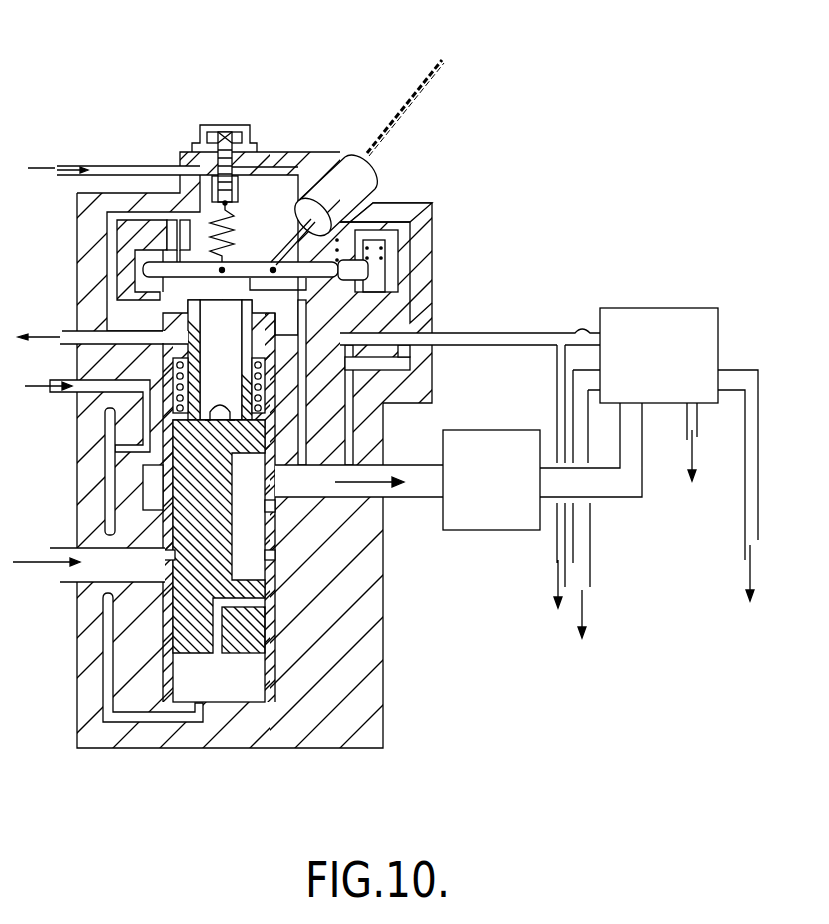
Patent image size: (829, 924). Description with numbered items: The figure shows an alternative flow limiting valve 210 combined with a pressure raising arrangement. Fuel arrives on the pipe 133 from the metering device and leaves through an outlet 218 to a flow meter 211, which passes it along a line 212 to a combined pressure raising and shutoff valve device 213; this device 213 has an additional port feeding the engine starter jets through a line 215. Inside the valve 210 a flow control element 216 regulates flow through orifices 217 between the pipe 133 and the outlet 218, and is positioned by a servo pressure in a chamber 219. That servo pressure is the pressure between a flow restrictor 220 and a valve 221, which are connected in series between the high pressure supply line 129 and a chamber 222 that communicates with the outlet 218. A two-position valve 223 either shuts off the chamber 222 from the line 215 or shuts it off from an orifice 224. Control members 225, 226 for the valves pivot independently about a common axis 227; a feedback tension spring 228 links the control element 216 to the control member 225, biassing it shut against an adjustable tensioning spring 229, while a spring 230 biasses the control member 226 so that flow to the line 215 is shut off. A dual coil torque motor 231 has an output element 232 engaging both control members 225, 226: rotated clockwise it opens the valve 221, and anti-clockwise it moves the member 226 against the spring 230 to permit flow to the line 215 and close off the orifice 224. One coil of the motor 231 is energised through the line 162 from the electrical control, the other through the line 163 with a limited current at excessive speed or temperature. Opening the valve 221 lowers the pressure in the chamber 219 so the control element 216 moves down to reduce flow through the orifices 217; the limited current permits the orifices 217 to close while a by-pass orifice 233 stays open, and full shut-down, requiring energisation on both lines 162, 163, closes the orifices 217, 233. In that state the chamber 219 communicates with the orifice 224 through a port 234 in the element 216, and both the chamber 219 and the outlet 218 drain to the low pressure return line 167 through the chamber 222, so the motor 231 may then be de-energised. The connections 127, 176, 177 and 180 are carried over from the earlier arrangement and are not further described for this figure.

The supply conduit 127 is at (38, 168).
The control member 225 is at (200, 268).
The adjustable tensioning spring 229 is at (222, 212).
The common axis 227 is at (272, 253).
The chamber 222 is at (283, 182).
The line 162 is at (423, 72).
The line 163 is at (434, 78).
The dual coil torque motor 231 is at (361, 178).
The spring 230 is at (368, 250).
The two-position valve 223 is at (385, 257).
The control member 226 is at (330, 297).
The valve 221 is at (134, 277).
The low pressure return line 167 is at (40, 337).
The feedback tension spring 228 is at (183, 350).
The high pressure supply line 129 is at (44, 384).
The flow restrictor 220 is at (125, 447).
The pipe 133 is at (40, 572).
The port 234 is at (217, 627).
The output element 232 is at (280, 283).
The orifices 217 is at (275, 482).
The outlet 218 is at (415, 478).
The by-pass orifice 233 is at (273, 510).
The combined pressure raising and shutoff valve device 213 is at (684, 335).
The flow meter 211 is at (495, 515).
The line 212 is at (620, 485).
The line 215 is at (558, 570).
The outlet line 176 is at (582, 608).
The outlet line 180 is at (690, 452).
The outlet line 177 is at (745, 578).
The chamber 219 is at (218, 690).
The flow control element 216 is at (242, 642).
The orifice 224 is at (277, 650).
The flow limiting valve 210 is at (358, 727).